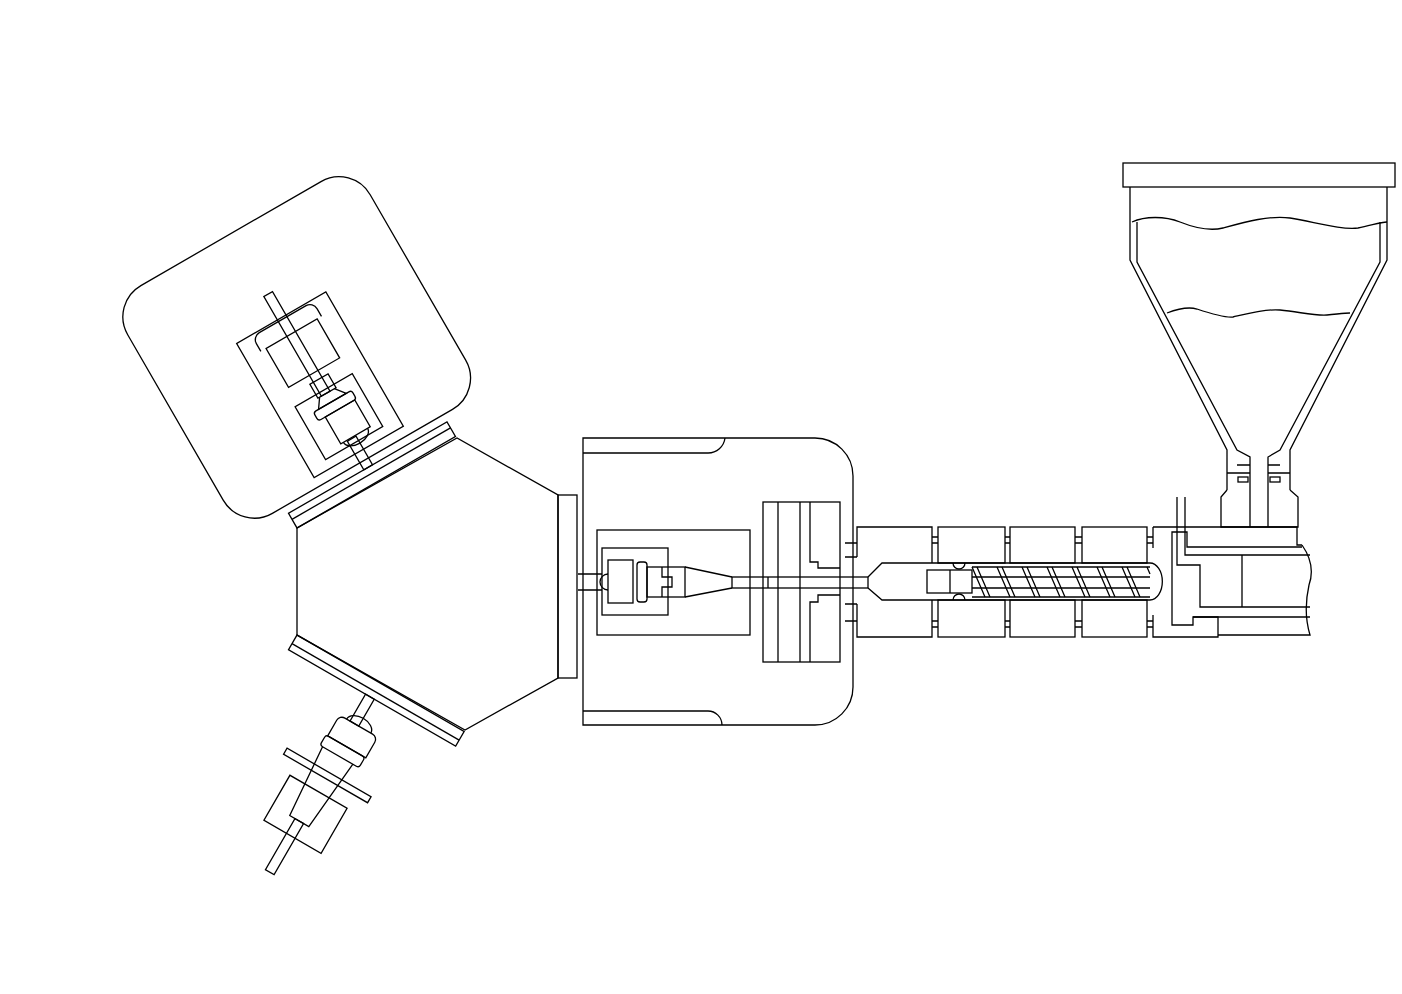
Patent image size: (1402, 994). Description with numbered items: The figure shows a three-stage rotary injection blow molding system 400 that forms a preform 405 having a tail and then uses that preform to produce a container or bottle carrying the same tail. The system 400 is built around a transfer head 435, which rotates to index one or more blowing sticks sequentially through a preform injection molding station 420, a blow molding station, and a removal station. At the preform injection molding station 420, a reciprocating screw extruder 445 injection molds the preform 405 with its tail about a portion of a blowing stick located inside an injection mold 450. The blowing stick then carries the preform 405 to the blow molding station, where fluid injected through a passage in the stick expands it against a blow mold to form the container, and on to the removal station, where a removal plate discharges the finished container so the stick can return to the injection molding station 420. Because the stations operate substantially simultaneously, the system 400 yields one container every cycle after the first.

The three-stage rotary injection blow molding system 400 is at (257, 110).
The preform 405 is at (677, 565).
The preform injection molding station 420 is at (847, 443).
The transfer head 435 is at (296, 612).
The reciprocating screw extruder 445 is at (1045, 622).
The injection mold 450 is at (731, 631).